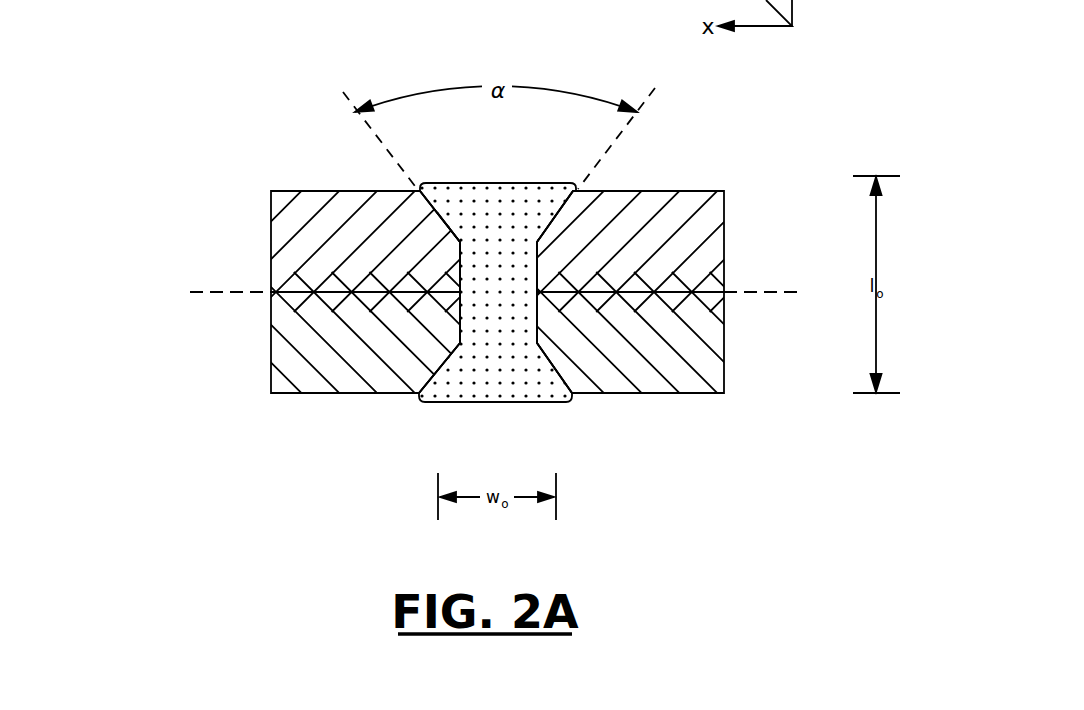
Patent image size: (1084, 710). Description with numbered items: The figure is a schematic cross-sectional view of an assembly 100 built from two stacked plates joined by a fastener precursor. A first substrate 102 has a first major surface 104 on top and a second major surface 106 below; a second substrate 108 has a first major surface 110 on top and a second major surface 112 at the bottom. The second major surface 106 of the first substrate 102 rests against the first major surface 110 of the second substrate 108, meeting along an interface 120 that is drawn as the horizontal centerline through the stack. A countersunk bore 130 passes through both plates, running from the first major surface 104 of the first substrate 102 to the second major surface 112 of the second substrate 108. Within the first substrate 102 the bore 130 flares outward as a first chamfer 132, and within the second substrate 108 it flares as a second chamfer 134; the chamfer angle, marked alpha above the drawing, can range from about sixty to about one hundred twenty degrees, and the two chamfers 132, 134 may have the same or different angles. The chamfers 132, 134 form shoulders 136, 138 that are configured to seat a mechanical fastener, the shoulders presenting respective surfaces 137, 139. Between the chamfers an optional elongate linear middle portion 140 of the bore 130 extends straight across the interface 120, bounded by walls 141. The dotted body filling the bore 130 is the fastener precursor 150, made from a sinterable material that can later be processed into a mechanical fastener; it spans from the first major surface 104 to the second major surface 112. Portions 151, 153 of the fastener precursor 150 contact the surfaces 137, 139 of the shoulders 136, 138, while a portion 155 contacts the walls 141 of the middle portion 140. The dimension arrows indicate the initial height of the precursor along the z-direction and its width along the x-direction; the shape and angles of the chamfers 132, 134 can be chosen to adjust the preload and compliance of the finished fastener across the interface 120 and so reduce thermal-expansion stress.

The assembly 100 is at (186, 150).
The first substrate 102 is at (270, 245).
The first major surface 104 is at (322, 190).
The second major surface 106 is at (713, 295).
The second substrate 108 is at (283, 358).
The first major surface 110 is at (228, 292).
The second major surface 112 is at (676, 394).
The interface 120 is at (766, 292).
The countersunk bore 130 is at (511, 160).
The first chamfer 132 is at (512, 205).
The second chamfer 134 is at (517, 382).
The shoulder 136 is at (452, 198).
The surface 137 is at (572, 195).
The shoulder 138 is at (464, 380).
The surface 139 is at (473, 400).
The elongate linear middle portion 140 is at (526, 312).
The walls 141 is at (460, 267).
The fastener precursor 150 is at (488, 183).
The portion 151 is at (452, 212).
The portion 153 is at (452, 362).
The portion 155 is at (461, 327).